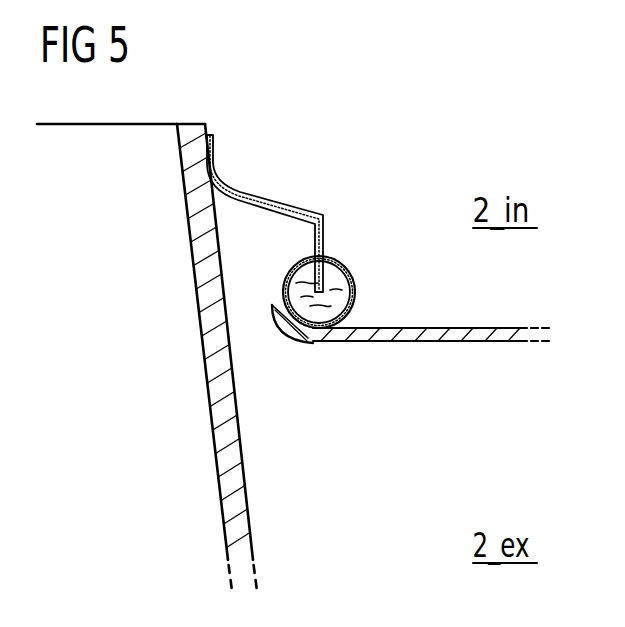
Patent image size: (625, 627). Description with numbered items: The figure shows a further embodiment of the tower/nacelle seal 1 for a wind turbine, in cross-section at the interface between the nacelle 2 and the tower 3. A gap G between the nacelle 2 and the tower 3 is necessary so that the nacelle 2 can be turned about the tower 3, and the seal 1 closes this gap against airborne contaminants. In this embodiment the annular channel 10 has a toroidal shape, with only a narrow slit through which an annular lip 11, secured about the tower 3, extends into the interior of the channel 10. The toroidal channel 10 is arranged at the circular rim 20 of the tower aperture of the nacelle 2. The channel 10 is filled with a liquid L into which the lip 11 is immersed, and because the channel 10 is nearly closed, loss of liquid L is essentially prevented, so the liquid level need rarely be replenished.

The tower/nacelle seal 1 is at (363, 210).
The nacelle 2 is at (463, 338).
The tower 3 is at (233, 477).
The annular channel 10 is at (355, 290).
The annular lip 11 is at (323, 237).
The circular rim 20 is at (278, 302).
The liquid L is at (317, 318).
The gap G is at (248, 318).